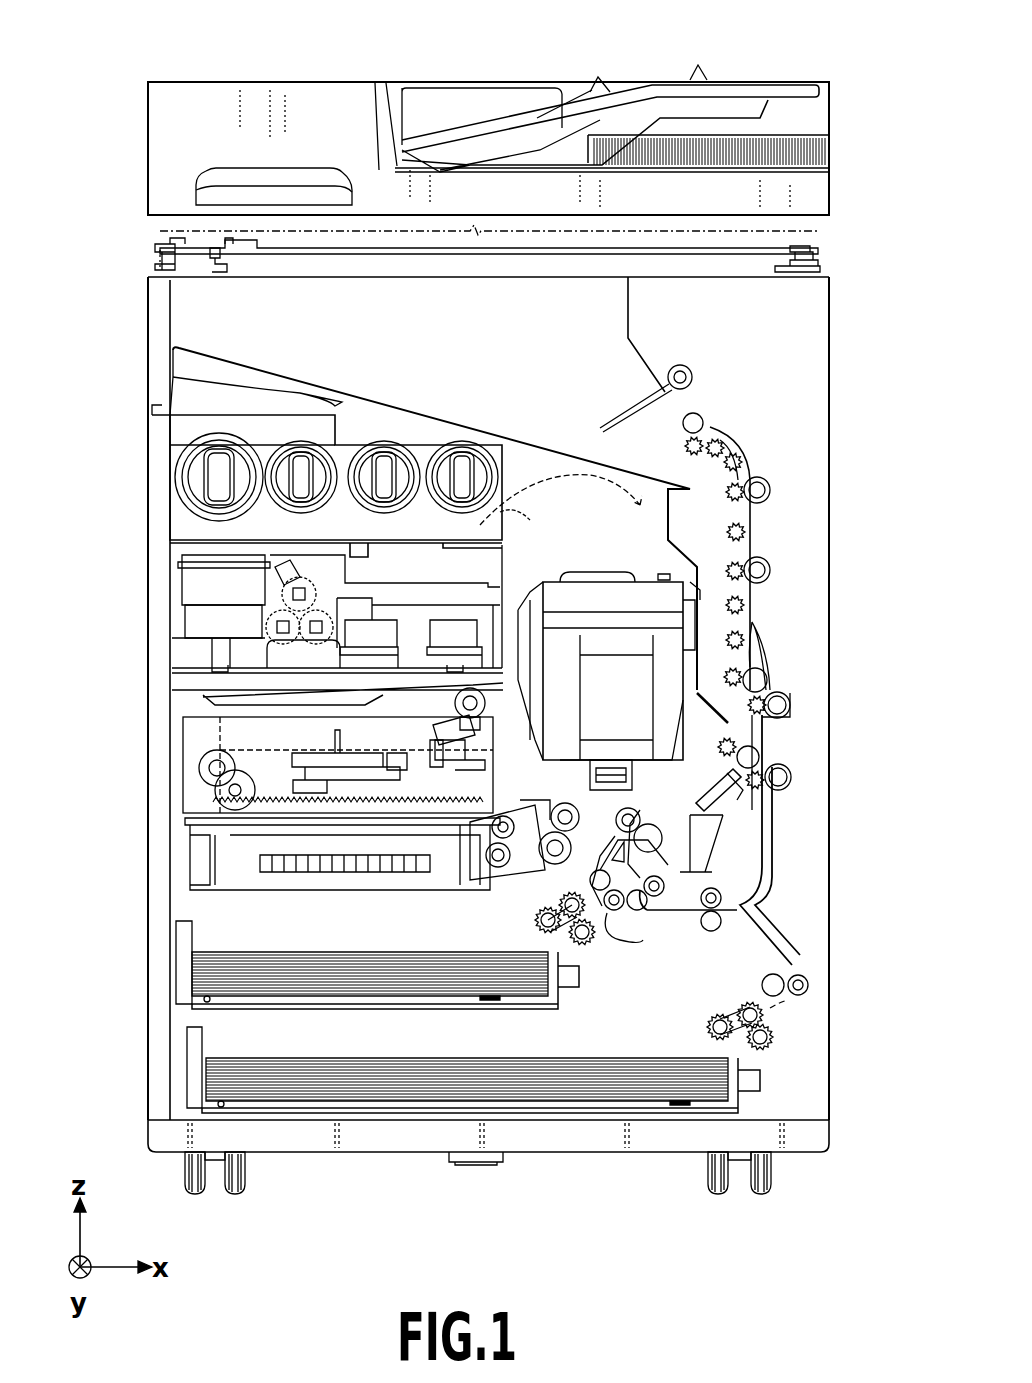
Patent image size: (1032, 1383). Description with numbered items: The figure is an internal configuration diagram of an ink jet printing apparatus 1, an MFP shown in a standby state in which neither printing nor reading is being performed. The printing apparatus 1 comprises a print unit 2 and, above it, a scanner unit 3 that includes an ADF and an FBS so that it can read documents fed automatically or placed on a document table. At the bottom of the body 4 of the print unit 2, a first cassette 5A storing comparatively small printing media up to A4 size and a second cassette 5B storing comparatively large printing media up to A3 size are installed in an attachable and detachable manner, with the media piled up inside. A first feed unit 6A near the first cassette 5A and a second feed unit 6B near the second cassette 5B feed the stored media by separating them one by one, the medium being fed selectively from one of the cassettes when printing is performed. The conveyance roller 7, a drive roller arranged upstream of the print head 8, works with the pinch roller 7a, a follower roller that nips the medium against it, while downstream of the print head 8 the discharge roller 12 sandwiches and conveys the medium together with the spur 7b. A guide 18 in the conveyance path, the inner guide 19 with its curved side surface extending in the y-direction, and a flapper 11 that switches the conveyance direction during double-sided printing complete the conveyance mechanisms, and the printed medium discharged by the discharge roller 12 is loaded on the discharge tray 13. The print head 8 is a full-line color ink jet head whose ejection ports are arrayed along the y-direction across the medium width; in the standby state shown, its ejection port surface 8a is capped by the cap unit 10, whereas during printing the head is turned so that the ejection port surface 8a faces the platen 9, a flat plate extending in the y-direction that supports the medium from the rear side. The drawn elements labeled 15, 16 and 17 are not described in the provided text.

The printing apparatus 1 is at (776, 58).
The print unit 2 is at (76, 280).
The scanner unit 3 is at (76, 83).
The body 4 is at (832, 352).
The first cassette 5A is at (182, 963).
The second cassette 5B is at (196, 1073).
The first feed unit 6A is at (585, 932).
The second feed unit 6B is at (772, 1034).
The conveyance roller 7 is at (780, 777).
The pinch roller 7a is at (615, 900).
The spur 7b is at (736, 606).
The print head 8 is at (644, 700).
The ejection port surface 8a is at (612, 770).
The platen 9 is at (640, 797).
The cap unit 10 is at (723, 867).
The flapper 11 is at (757, 650).
The discharge roller 12 is at (695, 423).
The discharge tray 13 is at (432, 418).
The developing unit 15 is at (180, 622).
The laser scanner unit 16 is at (196, 858).
The drive unit 17 is at (192, 742).
The guide 18 is at (760, 530).
The inner guide 19 is at (742, 878).